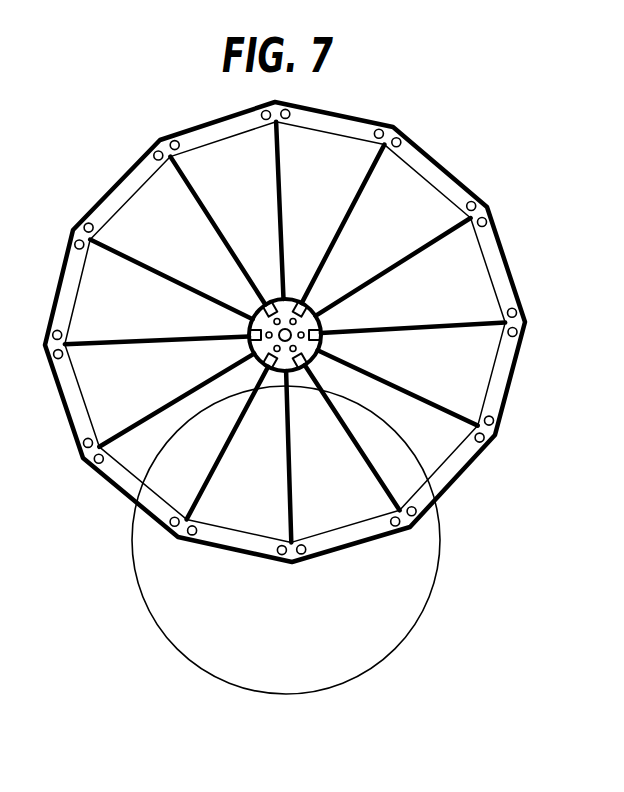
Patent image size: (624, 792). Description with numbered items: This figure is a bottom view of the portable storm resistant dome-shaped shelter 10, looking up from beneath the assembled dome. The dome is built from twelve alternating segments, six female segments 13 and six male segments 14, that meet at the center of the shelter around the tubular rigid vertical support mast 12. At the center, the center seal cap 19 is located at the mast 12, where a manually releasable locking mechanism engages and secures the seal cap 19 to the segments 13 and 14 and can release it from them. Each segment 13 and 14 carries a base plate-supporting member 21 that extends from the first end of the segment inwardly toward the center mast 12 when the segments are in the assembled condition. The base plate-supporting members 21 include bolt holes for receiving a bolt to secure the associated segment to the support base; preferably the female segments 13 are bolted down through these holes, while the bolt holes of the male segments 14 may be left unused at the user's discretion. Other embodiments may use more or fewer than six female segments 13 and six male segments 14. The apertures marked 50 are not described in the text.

The portable storm resistant dome-shaped shelter 10 is at (443, 106).
The tubular rigid vertical support mast 12 is at (248, 347).
The female segment 13 is at (405, 207).
The male segment 14 is at (453, 270).
The center seal cap 19 is at (300, 342).
The base plate-supporting member 21 is at (227, 538).
The hub aperture 50 is at (292, 318).